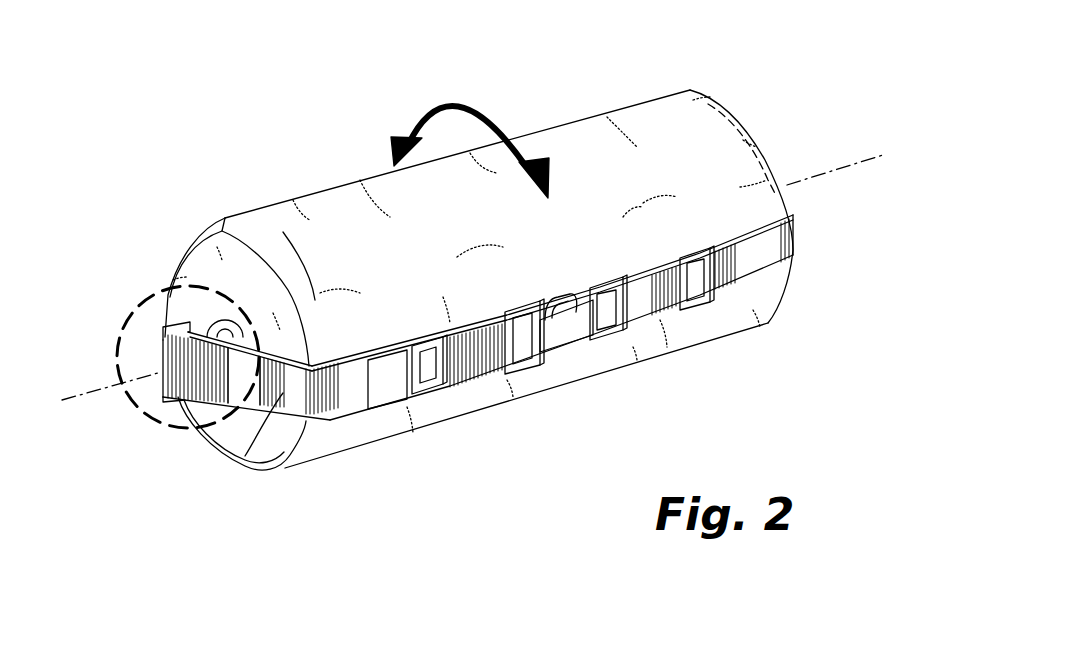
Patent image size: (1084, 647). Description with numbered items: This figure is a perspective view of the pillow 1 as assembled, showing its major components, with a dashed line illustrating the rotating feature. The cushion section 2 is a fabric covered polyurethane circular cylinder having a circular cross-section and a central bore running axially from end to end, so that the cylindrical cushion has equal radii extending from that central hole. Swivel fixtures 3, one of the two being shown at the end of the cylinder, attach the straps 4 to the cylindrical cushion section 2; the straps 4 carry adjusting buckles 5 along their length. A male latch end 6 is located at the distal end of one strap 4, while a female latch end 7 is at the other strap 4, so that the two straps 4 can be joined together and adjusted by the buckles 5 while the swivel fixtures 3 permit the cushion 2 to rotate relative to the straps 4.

The pillow 1 is at (748, 72).
The cushion section 2 is at (648, 140).
The swivel fixture 3 is at (205, 314).
The strap 4 is at (143, 430).
The adjusting buckle 5 is at (430, 394).
The male latch end 6 is at (607, 283).
The female latch end 7 is at (560, 352).